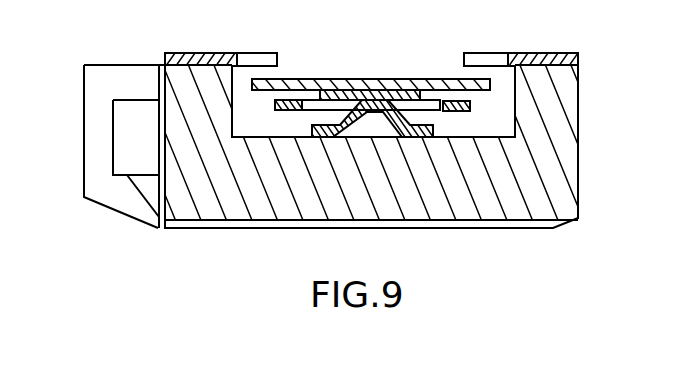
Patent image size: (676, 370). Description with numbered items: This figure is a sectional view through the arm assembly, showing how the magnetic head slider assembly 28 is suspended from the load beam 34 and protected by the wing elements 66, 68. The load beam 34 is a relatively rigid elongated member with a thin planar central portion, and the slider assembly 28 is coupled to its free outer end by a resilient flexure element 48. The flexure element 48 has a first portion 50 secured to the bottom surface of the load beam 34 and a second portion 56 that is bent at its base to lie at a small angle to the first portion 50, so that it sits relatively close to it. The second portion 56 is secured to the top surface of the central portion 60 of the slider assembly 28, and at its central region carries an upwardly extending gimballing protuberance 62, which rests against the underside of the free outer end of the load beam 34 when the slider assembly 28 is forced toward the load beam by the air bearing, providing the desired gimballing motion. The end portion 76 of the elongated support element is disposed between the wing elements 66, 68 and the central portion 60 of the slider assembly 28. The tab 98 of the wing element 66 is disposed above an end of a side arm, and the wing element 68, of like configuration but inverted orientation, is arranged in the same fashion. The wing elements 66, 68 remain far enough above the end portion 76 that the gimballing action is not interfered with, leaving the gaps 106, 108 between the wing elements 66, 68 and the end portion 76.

The magnetic head slider assembly 28 is at (580, 147).
The wing element 66 is at (196, 53).
The tab 98 is at (254, 53).
The gap 106 is at (276, 67).
The wing element 68 is at (540, 53).
The gap 108 is at (465, 72).
The end portion of the support element 76 is at (395, 78).
The load beam 34 is at (339, 95).
The first portion of the flexure element 50 is at (273, 107).
The flexure element 48 is at (470, 106).
The second portion of the flexure element 56 is at (312, 132).
The gimballing protuberance 62 is at (408, 111).
The central portion of the slider assembly 60 is at (463, 135).